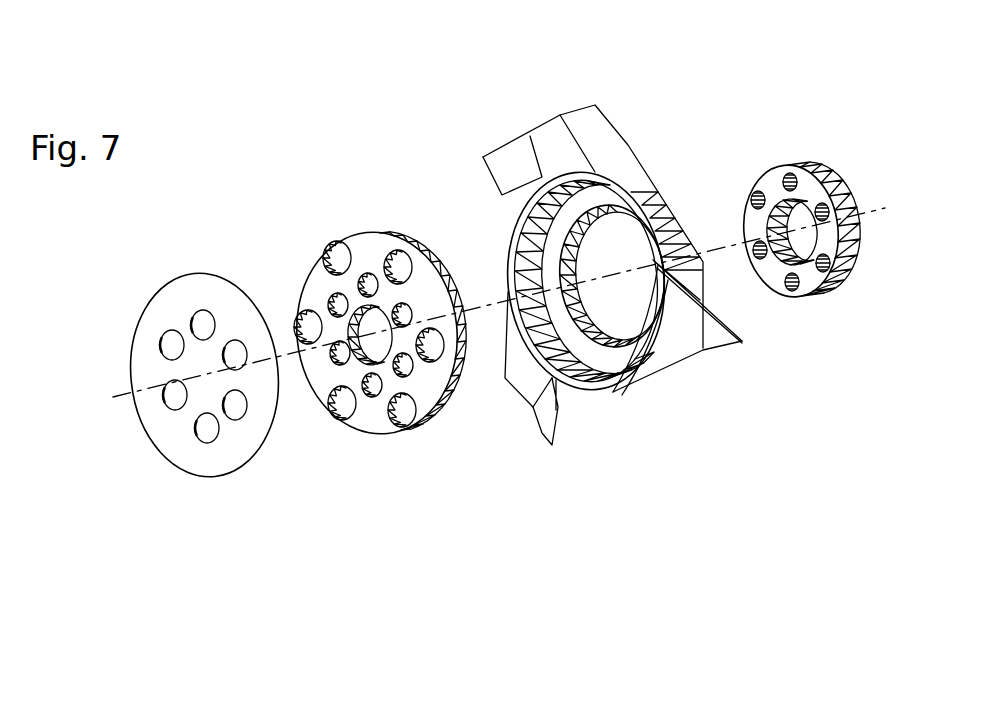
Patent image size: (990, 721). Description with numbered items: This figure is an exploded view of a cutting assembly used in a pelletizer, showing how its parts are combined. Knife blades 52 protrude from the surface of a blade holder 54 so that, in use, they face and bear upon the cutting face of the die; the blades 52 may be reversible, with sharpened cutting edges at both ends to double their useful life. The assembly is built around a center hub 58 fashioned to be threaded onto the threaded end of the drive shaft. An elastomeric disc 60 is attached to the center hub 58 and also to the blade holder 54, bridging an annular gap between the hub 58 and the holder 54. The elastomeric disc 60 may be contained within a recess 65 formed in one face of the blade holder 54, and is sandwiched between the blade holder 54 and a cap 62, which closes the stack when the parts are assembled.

The knife blades 52 is at (509, 160).
The blade holder 54 is at (597, 395).
The center hub 58 is at (797, 302).
The elastomeric disc 60 is at (345, 430).
The cap 62 is at (213, 478).
The recess 65 is at (573, 200).